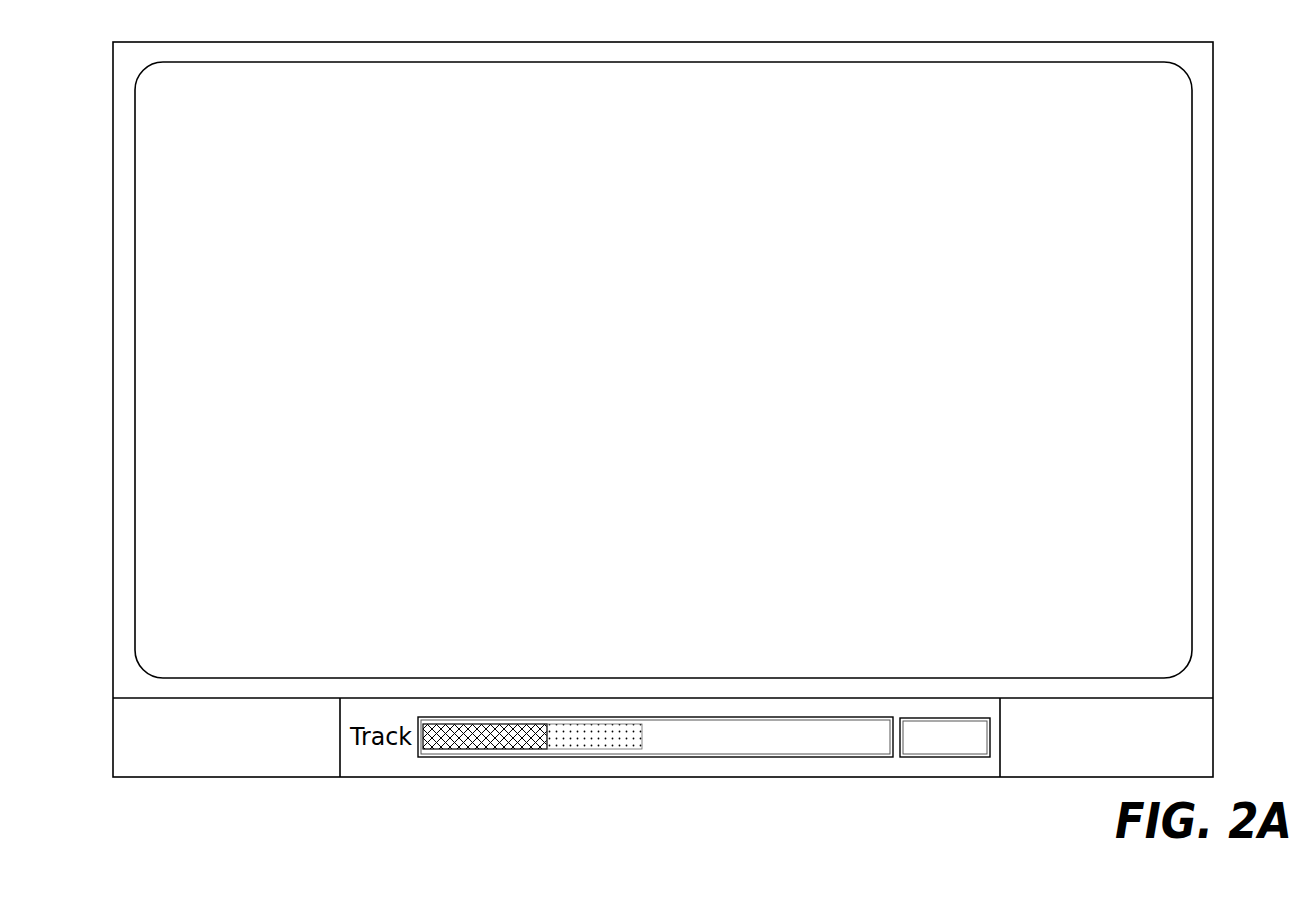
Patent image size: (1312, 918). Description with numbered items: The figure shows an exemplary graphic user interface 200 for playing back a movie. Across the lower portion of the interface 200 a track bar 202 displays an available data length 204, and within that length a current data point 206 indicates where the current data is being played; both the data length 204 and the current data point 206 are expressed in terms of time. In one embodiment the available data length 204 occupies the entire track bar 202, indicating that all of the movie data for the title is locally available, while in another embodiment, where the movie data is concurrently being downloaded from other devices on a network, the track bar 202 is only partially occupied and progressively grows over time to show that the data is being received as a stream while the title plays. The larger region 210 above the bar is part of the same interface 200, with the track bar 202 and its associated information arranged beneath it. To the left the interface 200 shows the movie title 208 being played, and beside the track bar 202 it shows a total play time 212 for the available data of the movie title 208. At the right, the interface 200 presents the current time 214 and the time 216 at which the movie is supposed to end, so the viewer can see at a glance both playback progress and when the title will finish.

The graphic user interface 200 is at (663, 391).
The track bar 202 is at (782, 748).
The available data length 204 is at (623, 743).
The current data point 206 is at (543, 752).
The movie title 208 is at (247, 765).
The video display area 210 is at (663, 370).
The total play time 212 is at (942, 747).
The current time 214 is at (1163, 720).
The end time 216 is at (1203, 757).